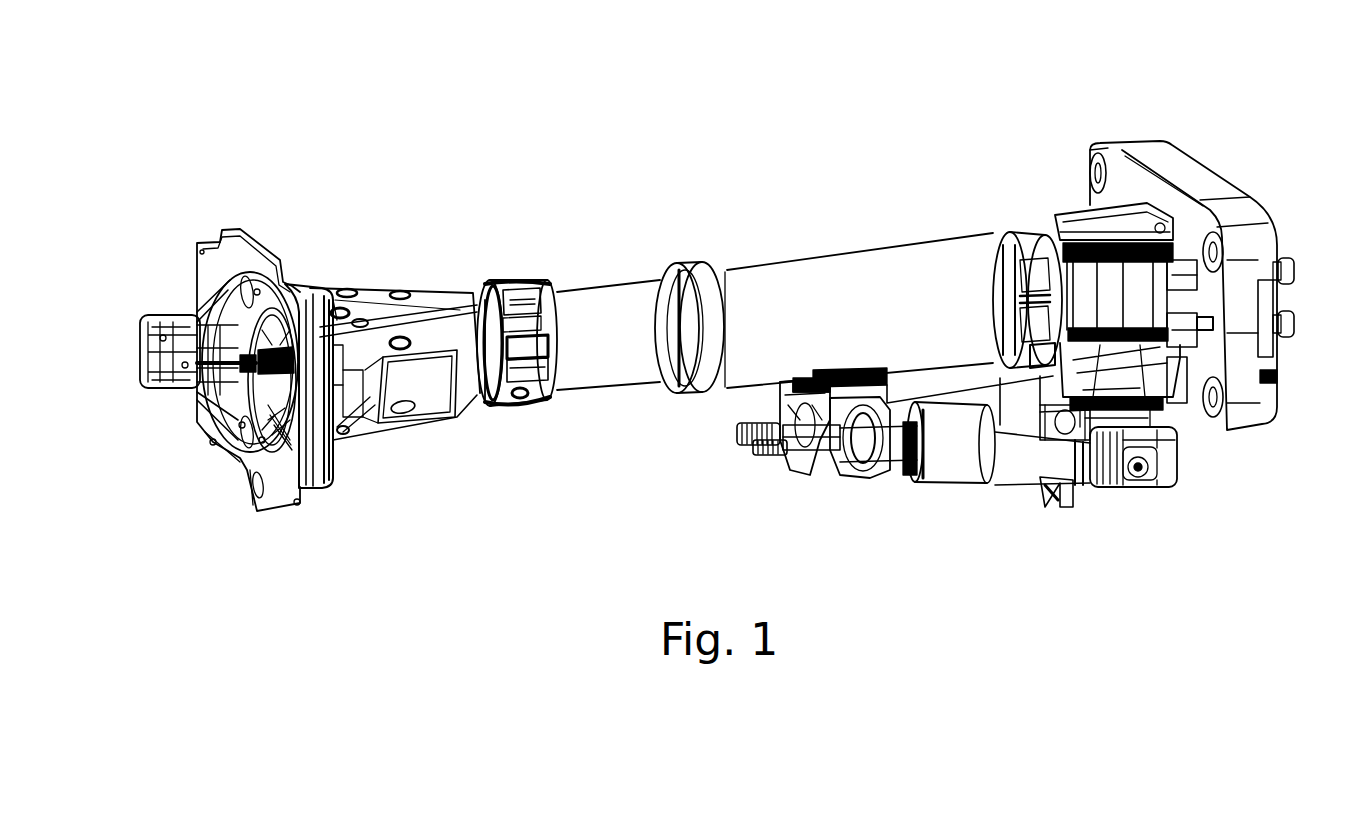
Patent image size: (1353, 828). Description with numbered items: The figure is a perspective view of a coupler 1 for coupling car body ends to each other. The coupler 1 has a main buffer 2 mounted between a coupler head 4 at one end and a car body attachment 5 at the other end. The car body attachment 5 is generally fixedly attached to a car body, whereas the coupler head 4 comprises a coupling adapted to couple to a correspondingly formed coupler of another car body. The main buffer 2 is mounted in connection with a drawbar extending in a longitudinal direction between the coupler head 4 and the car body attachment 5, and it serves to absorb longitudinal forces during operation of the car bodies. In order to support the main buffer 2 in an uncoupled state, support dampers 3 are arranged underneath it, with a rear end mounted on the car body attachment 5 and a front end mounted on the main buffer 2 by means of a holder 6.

The coupler 1 is at (605, 167).
The main buffer 2 is at (800, 255).
The support dampers 3 is at (950, 468).
The coupler head 4 is at (183, 472).
The car body attachment 5 is at (1183, 168).
The holder 6 is at (770, 405).